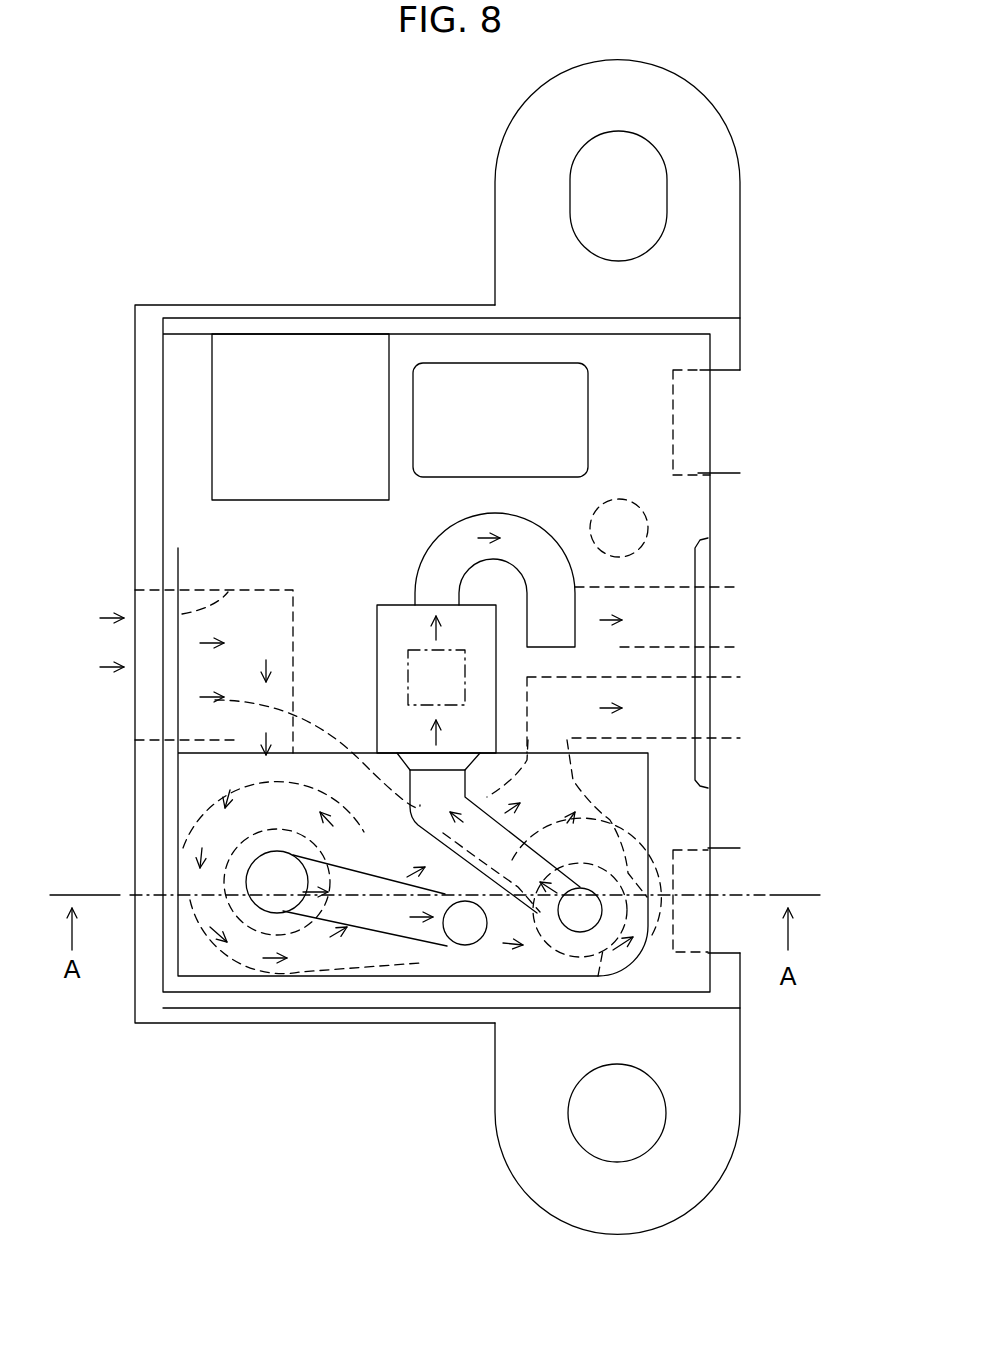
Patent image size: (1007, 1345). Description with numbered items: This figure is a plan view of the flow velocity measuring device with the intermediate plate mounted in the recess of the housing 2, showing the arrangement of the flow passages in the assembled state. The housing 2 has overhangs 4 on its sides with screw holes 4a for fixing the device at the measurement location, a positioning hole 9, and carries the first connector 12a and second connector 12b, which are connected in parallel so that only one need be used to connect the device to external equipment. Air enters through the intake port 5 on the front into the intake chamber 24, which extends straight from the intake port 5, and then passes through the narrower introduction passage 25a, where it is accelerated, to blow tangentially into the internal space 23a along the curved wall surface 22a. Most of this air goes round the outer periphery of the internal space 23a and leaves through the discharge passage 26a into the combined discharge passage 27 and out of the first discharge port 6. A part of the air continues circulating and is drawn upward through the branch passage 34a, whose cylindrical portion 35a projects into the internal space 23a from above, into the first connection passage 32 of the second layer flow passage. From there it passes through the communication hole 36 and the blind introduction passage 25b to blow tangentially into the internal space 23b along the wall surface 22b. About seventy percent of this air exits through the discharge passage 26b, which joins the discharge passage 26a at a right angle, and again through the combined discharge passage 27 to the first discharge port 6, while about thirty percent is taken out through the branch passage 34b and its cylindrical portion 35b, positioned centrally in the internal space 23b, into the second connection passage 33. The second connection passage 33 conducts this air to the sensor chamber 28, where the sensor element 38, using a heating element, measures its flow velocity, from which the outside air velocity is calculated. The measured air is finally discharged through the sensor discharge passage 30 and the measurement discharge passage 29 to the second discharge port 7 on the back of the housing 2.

The housing 2 is at (195, 298).
The overhangs 4 is at (742, 196).
The screw holes 4a is at (655, 156).
The first connector 12a is at (311, 303).
The second connector 12b is at (468, 362).
The sensor chamber 28 is at (388, 603).
The sensor element 38 is at (422, 650).
The sensor discharge passage 30 is at (553, 525).
The measurement discharge passage 29 is at (718, 557).
The positioning hole 9 is at (745, 503).
The second discharge port 7 is at (750, 613).
The combined discharge passage 27 is at (692, 700).
The first discharge port 6 is at (750, 717).
The intake port 5 is at (135, 675).
The intake chamber 24 is at (170, 597).
The discharge passage 26a is at (215, 700).
The introduction passage 25a is at (215, 775).
The internal space 23a is at (190, 822).
The wall surface 22a is at (190, 870).
The discharge passage 26b is at (682, 805).
The wall surface 22b is at (700, 848).
The internal space 23b is at (712, 893).
The cylindrical portion 35a is at (162, 1000).
The first connection passage 32 is at (317, 912).
The branch passage 34a is at (253, 907).
The communication hole 36 is at (442, 917).
The second connection passage 33 is at (397, 903).
The branch passage 34b is at (537, 917).
The blind introduction passage 25b is at (503, 960).
The cylindrical portion 35b is at (603, 978).